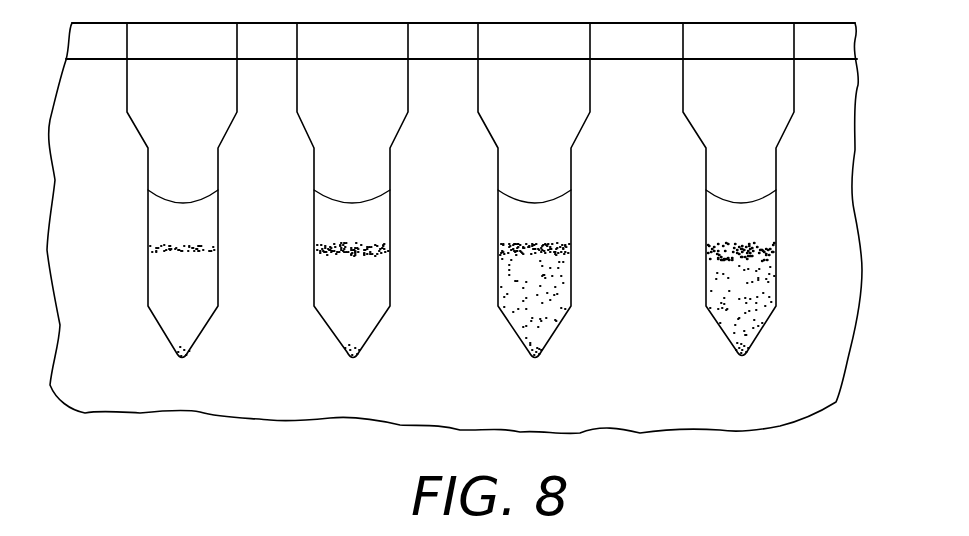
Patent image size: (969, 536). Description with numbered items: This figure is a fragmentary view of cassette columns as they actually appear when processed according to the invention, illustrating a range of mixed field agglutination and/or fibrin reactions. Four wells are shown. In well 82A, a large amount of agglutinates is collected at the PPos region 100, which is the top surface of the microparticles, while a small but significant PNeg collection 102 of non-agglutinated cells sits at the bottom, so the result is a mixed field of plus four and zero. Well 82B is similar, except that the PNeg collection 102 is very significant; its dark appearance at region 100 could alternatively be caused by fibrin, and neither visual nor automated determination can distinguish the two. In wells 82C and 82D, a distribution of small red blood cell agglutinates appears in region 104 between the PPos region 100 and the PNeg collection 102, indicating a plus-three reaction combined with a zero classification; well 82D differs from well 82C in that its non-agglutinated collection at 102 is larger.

The well 82A is at (219, 267).
The well 82B is at (391, 297).
The well 82C is at (571, 172).
The well 82D is at (815, 172).
The PPos region 100 is at (148, 250).
The PNeg collection 102 is at (190, 358).
The region of distributed agglutinates 104 is at (563, 295).